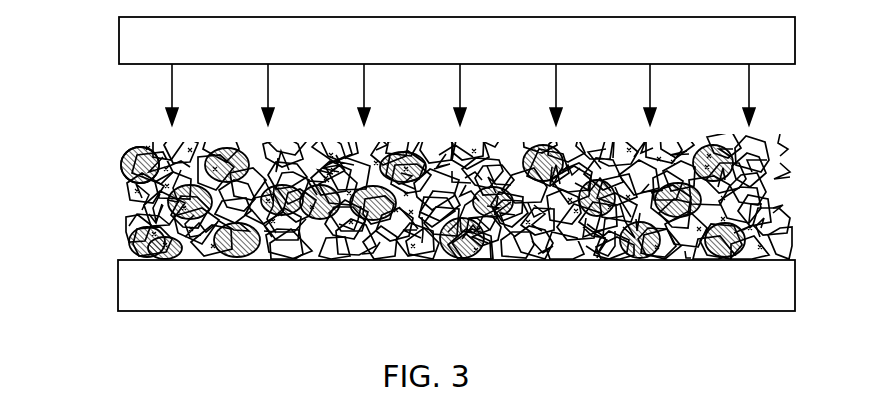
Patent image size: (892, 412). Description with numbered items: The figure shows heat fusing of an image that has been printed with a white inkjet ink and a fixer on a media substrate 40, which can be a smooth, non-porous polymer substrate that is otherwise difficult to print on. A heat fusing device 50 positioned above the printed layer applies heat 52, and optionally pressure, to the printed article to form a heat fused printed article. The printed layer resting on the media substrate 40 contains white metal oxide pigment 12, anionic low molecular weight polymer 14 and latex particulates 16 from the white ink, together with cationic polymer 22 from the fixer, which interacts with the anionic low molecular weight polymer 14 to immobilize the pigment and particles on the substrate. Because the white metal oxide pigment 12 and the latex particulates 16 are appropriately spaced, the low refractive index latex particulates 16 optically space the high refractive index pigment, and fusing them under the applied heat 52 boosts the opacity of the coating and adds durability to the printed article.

The white metal oxide pigment 12 is at (140, 198).
The anionic low molecular weight polymer 14 is at (160, 220).
The latex particulates 16 is at (132, 166).
The cationic polymer 22 is at (132, 164).
The media substrate 40 is at (469, 296).
The heat fusing device 50 is at (469, 50).
The heat 52 is at (172, 82).